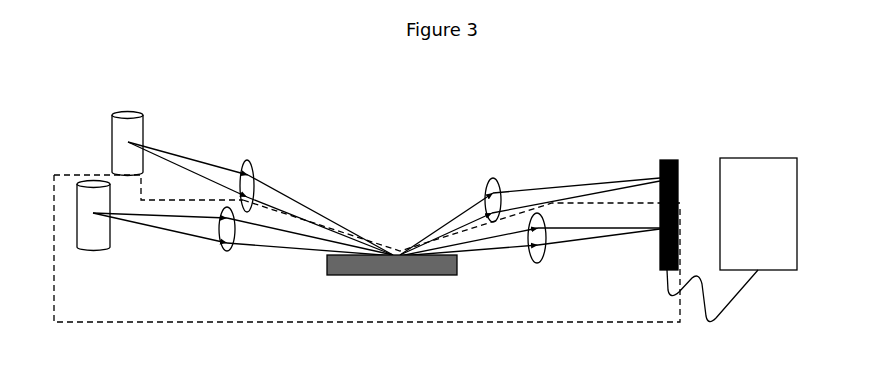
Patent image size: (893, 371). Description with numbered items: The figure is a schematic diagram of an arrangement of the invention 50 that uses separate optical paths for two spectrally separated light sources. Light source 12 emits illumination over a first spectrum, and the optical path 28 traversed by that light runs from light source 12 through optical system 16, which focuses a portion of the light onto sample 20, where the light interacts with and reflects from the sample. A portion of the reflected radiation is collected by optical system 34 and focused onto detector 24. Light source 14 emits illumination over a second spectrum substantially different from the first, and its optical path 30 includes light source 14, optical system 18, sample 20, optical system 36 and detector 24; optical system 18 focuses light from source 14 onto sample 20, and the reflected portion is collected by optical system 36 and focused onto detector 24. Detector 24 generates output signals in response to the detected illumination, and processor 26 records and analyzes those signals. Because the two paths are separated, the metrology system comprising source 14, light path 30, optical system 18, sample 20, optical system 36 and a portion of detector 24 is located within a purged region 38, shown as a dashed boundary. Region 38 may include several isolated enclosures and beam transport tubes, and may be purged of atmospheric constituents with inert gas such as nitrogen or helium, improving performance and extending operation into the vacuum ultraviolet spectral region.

The arrangement of the invention 50 is at (432, 88).
The light source 12 is at (127, 132).
The light source 14 is at (93, 227).
The optical system 16 is at (247, 176).
The optical system 18 is at (227, 242).
The sample 20 is at (392, 280).
The detector 24 is at (668, 202).
The processor 26 is at (746, 220).
The optical path 28 is at (394, 195).
The optical path 30 is at (376, 246).
The optical system 34 is at (495, 188).
The optical system 36 is at (538, 249).
The purged region 38 is at (608, 314).